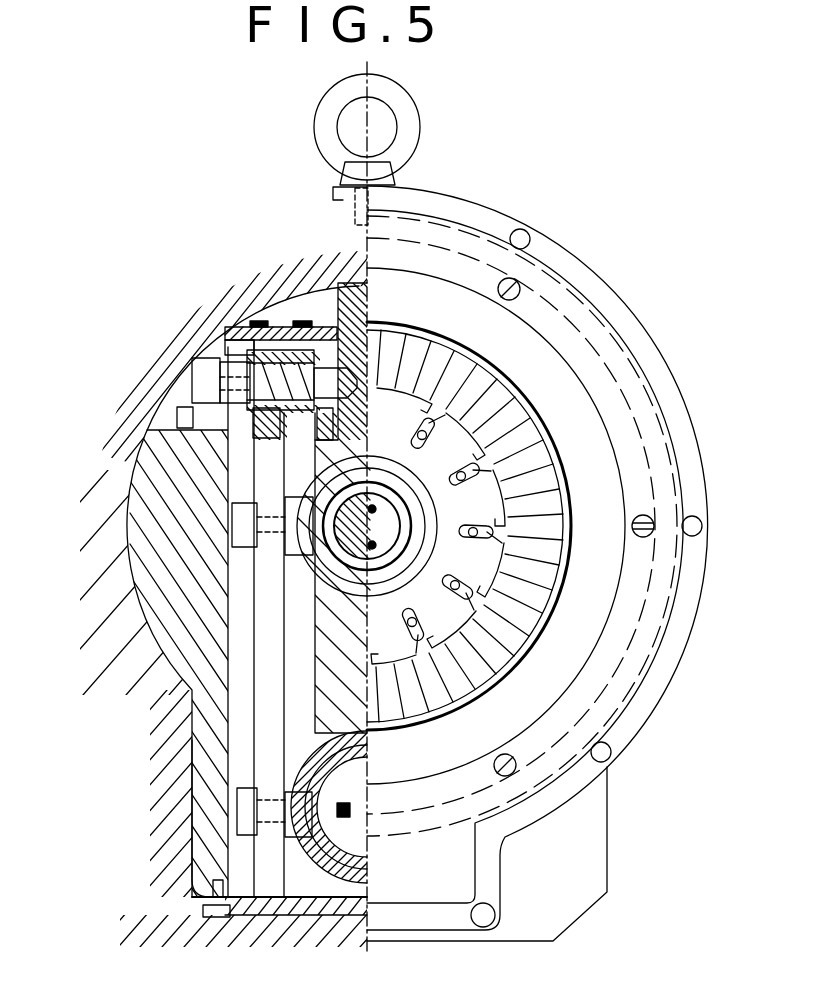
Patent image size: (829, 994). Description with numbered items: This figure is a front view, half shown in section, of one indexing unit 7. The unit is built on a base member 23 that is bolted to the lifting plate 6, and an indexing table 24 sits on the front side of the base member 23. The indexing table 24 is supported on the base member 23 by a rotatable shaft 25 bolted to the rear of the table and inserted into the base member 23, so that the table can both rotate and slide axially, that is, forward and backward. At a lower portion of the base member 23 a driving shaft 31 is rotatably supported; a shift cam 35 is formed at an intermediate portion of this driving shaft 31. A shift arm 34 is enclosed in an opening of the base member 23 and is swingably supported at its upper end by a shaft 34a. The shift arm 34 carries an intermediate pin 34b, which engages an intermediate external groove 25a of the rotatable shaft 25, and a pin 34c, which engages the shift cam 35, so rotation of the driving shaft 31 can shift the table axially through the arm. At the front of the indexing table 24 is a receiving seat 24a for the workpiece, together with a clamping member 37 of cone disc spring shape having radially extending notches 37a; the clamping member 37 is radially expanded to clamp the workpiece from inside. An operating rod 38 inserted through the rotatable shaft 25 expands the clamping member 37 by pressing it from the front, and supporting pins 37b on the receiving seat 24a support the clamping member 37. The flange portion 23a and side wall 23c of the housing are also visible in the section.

The lifting plate 6 is at (206, 318).
The indexing unit 7 is at (600, 276).
The base member 23 is at (145, 578).
The housing flange 23a is at (632, 742).
The housing side wall 23c is at (237, 752).
The indexing table 24 is at (567, 380).
The receiving seat 24a is at (556, 556).
The rotatable shaft 25 is at (340, 568).
The intermediate external groove 25a is at (300, 486).
The driving shaft 31 is at (350, 818).
The shift arm 34 is at (262, 468).
The shaft 34a is at (192, 362).
The intermediate pin 34b is at (297, 552).
The pin 34c is at (300, 848).
The shift cam 35 is at (340, 880).
The clamping member 37 is at (505, 382).
The radially extending notches 37a is at (556, 450).
The supporting pins 37b is at (462, 700).
The operating rod 38 is at (300, 516).